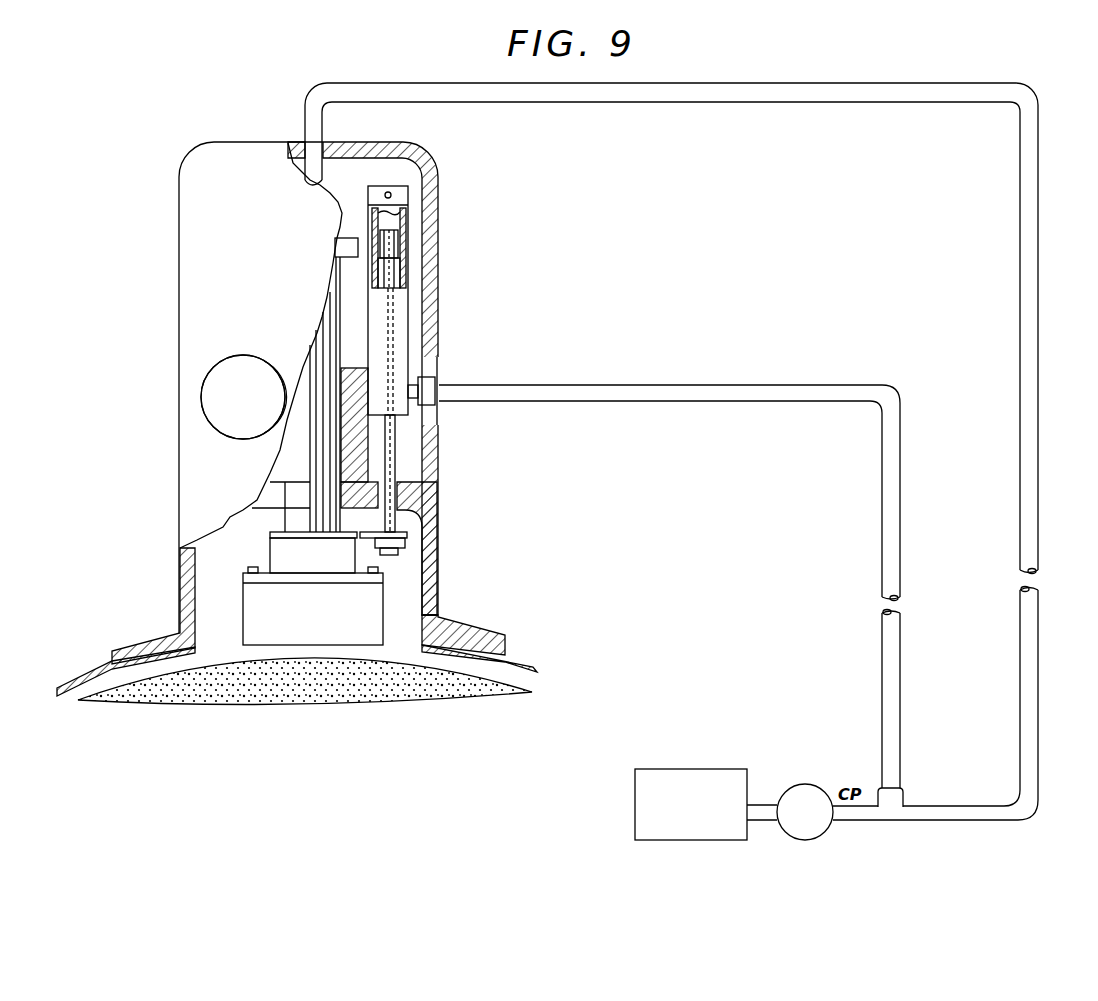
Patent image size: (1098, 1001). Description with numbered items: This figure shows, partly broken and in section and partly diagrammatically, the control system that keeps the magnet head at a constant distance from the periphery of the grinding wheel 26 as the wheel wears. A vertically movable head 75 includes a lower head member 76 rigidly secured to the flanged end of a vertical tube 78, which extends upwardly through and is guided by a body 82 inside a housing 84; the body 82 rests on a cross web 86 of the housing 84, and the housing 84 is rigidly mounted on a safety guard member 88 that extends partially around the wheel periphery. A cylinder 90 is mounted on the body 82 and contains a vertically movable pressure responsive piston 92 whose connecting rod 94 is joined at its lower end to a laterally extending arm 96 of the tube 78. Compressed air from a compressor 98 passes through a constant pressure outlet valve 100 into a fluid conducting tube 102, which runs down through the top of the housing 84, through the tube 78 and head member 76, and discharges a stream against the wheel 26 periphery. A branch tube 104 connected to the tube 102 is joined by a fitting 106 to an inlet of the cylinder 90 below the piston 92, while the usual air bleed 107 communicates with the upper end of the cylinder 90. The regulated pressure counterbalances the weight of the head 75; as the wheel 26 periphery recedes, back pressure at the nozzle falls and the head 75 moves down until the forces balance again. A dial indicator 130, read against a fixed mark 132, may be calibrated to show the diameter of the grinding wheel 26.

The grinding wheel 26 is at (417, 693).
The vertically movable head 75 is at (262, 538).
The lower head member 76 is at (370, 605).
The vertical tube 78 is at (299, 460).
The body 82 is at (370, 433).
The housing 84 is at (437, 185).
The cross web 86 is at (410, 493).
The safety guard member 88 is at (528, 668).
The cylinder 90 is at (410, 322).
The piston 92 is at (400, 243).
The connecting rod 94 is at (392, 455).
The laterally extending arm 96 is at (400, 535).
The compressor 98 is at (640, 815).
The constant pressure outlet valve 100 is at (805, 784).
The fluid conducting tube 102 is at (312, 183).
The branch tube 104 is at (660, 402).
The fitting 106 is at (428, 392).
The air bleed 107 is at (392, 195).
The dial indicator 130 is at (203, 387).
The fixed mark 132 is at (242, 352).